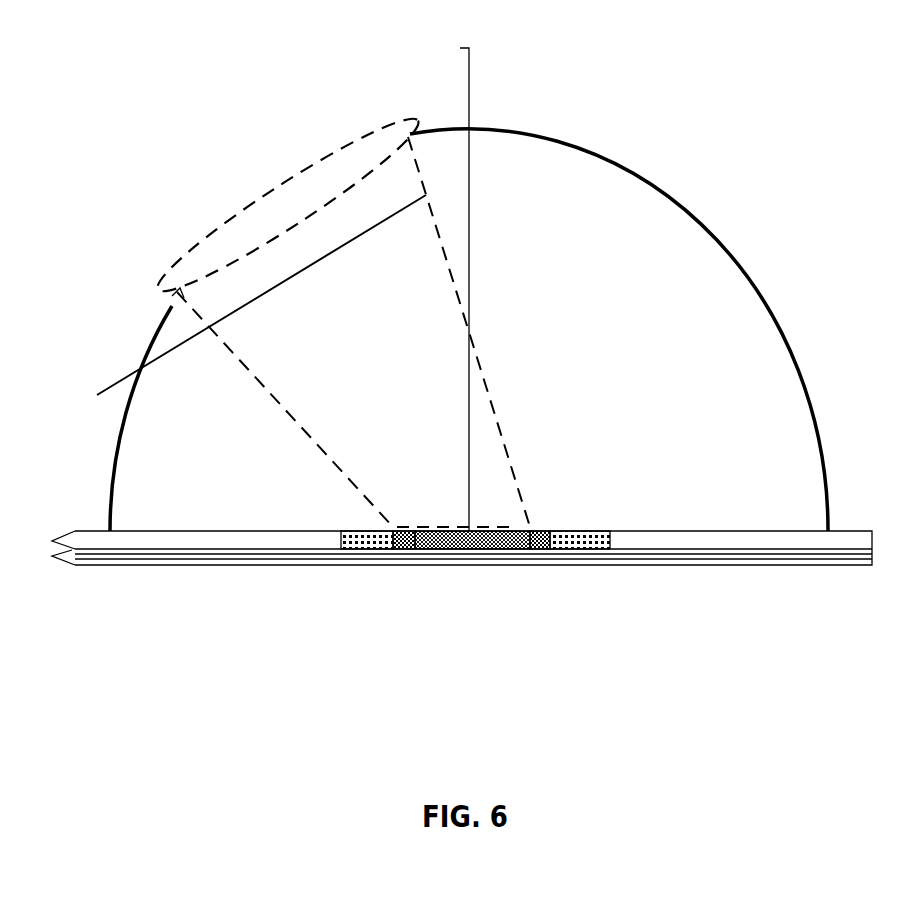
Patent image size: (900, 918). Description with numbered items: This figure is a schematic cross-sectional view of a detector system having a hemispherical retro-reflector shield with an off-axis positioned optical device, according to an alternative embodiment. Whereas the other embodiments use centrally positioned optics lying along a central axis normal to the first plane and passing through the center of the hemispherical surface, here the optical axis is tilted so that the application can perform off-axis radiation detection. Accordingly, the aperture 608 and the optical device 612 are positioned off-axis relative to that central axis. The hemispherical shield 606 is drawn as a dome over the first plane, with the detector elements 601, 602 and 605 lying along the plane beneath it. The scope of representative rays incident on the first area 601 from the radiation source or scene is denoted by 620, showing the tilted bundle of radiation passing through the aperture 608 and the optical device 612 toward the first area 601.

The first area 601 is at (545, 537).
The light emitting element 602 is at (597, 537).
The central light emitting element 605 is at (455, 540).
The dome lens 606 is at (582, 147).
The aperture 608 is at (408, 135).
The optical device 612 is at (332, 147).
The scope of representative rays 620 is at (232, 360).